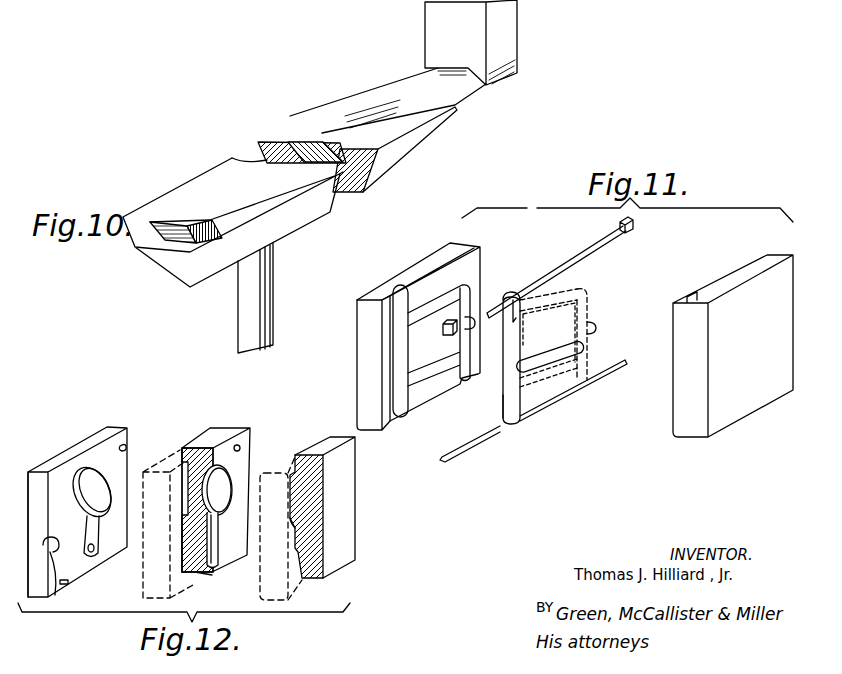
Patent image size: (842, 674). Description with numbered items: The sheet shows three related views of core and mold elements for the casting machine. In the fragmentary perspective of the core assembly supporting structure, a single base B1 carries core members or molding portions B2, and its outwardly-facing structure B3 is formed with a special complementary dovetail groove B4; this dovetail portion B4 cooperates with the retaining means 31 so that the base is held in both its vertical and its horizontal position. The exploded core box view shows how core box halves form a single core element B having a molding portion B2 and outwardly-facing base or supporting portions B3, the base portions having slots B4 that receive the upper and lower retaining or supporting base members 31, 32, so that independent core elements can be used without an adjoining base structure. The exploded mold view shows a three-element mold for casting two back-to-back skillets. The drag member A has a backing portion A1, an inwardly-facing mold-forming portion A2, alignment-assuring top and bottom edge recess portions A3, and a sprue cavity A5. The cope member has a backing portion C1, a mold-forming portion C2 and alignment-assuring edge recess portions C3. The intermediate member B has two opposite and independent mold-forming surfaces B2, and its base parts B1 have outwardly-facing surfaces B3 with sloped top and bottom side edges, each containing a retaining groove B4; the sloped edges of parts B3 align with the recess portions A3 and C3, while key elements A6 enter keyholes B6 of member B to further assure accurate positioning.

In FIG. 10, the retaining means / upper base member 31 is at (417, 87).
In FIG. 11, the retaining means / upper base member 31 is at (612, 245).
In FIG. 11, the lower base member 32 is at (484, 434).
In FIG. 11, the core element / intermediate mold member B is at (590, 283).
In FIG. 12, the core element / intermediate mold member B is at (229, 415).
In FIG. 10, the base / base parts B1 is at (415, 152).
In FIG. 12, the base / base parts B1 is at (208, 430).
In FIG. 10, the molding portion / mold-forming surfaces B2 is at (276, 276).
In FIG. 11, the molding portion / mold-forming surfaces B2 is at (503, 395).
In FIG. 12, the molding portion / mold-forming surfaces B2 is at (207, 495).
In FIG. 10, the outwardly-facing structure / base portions B3 is at (185, 187).
In FIG. 11, the outwardly-facing structure / base portions B3 is at (516, 298).
In FIG. 12, the outwardly-facing structure / base portions B3 is at (242, 427).
In FIG. 10, the dovetail groove / retaining slot B4 is at (290, 142).
In FIG. 11, the dovetail groove / retaining slot B4 is at (526, 298).
In FIG. 12, the dovetail groove / retaining slot B4 is at (197, 575).
In FIG. 12, the keyholes B6 is at (240, 447).
In FIG. 12, the drag mold member A is at (91, 425).
In FIG. 12, the backing portion A1 is at (52, 455).
In FIG. 12, the inwardly-facing mold-forming portion A2 is at (105, 548).
In FIG. 12, the alignment-assuring edge recess portions A3 is at (80, 575).
In FIG. 12, the sprue cavity A5 is at (53, 592).
In FIG. 12, the key element A6 is at (128, 447).
In FIG. 12, the backing portion C1 is at (326, 432).
In FIG. 12, the mold-forming portion C2 is at (290, 518).
In FIG. 12, the alignment-assuring edge recess portions C3 is at (300, 580).